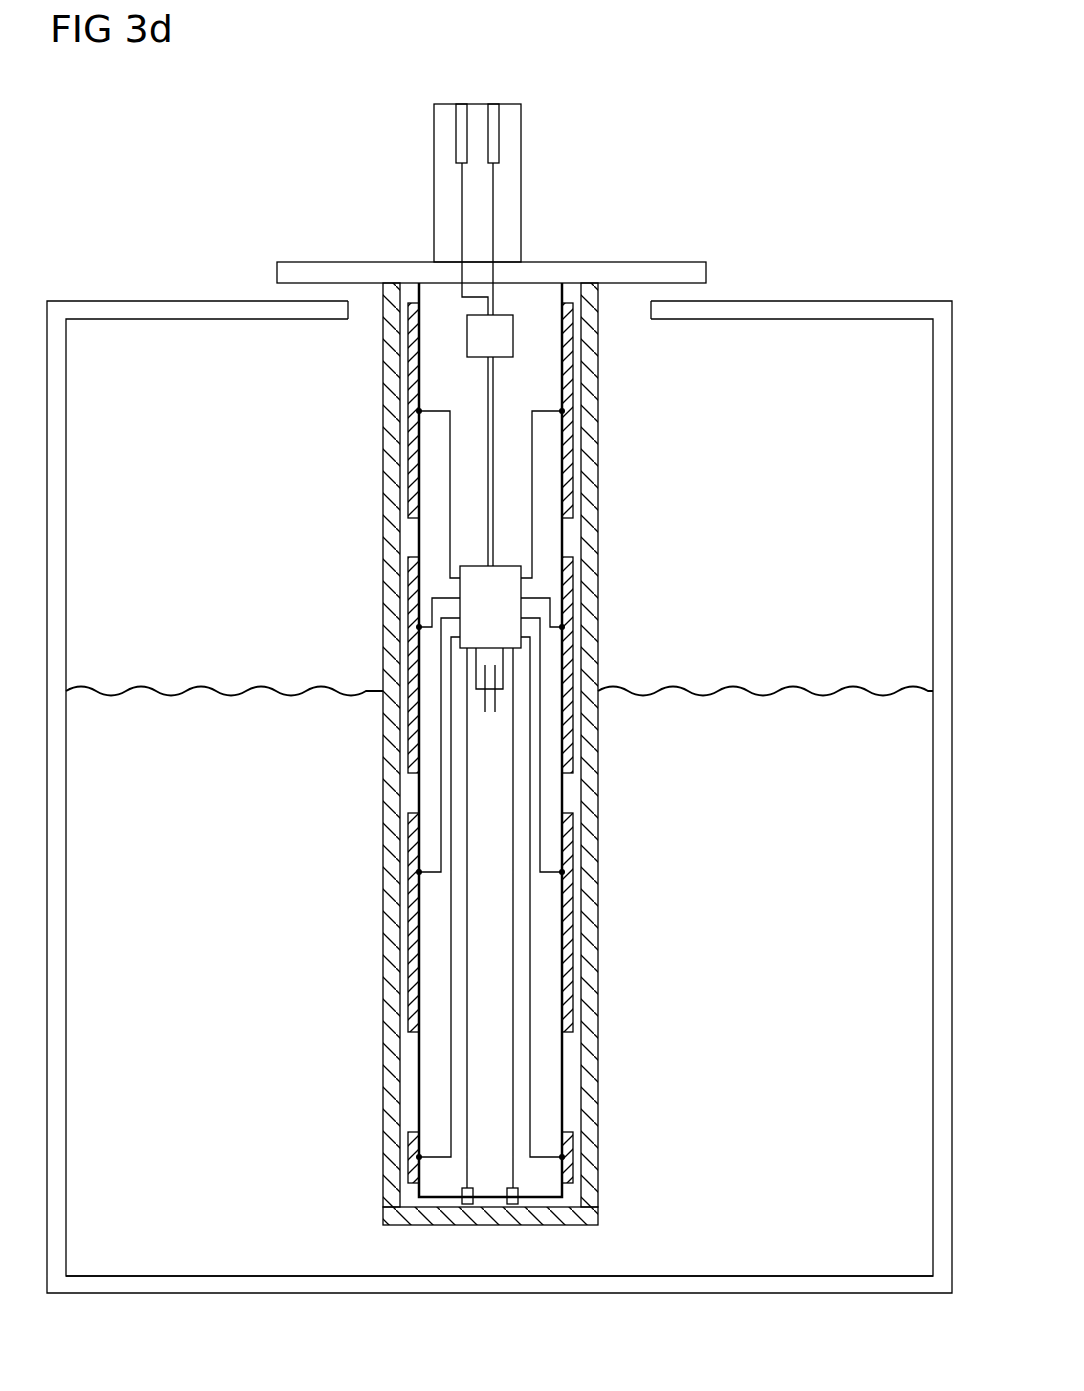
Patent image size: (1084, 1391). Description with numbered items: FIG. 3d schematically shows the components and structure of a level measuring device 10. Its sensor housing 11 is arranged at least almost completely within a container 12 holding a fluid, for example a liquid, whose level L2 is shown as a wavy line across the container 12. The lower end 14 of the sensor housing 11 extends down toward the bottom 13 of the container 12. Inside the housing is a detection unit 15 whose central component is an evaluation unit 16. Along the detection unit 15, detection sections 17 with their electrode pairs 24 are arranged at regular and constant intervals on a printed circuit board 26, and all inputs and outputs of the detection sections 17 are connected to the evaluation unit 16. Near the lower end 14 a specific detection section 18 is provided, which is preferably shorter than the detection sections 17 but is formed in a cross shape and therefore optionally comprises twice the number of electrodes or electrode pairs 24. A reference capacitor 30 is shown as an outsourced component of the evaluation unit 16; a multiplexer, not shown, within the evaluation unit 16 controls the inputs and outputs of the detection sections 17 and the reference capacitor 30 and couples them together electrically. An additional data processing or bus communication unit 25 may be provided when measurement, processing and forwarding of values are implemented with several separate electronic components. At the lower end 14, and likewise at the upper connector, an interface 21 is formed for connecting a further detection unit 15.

The level measuring device 10 is at (676, 199).
The sensor housing 11 is at (382, 545).
The container 12 is at (790, 300).
The bottom 13 is at (633, 1284).
The lower end 14 is at (413, 1216).
The detection unit 15 is at (546, 529).
The evaluation unit 16 is at (510, 585).
The detection section 17 is at (370, 303).
The specific detection section 18 is at (612, 1132).
The interface 21 is at (494, 104).
The electrode pair 24 is at (413, 1010).
The bus communication unit 25 is at (522, 314).
The printed circuit board 26 is at (437, 1115).
The reference capacitor 30 is at (496, 707).
The level L2 is at (213, 699).